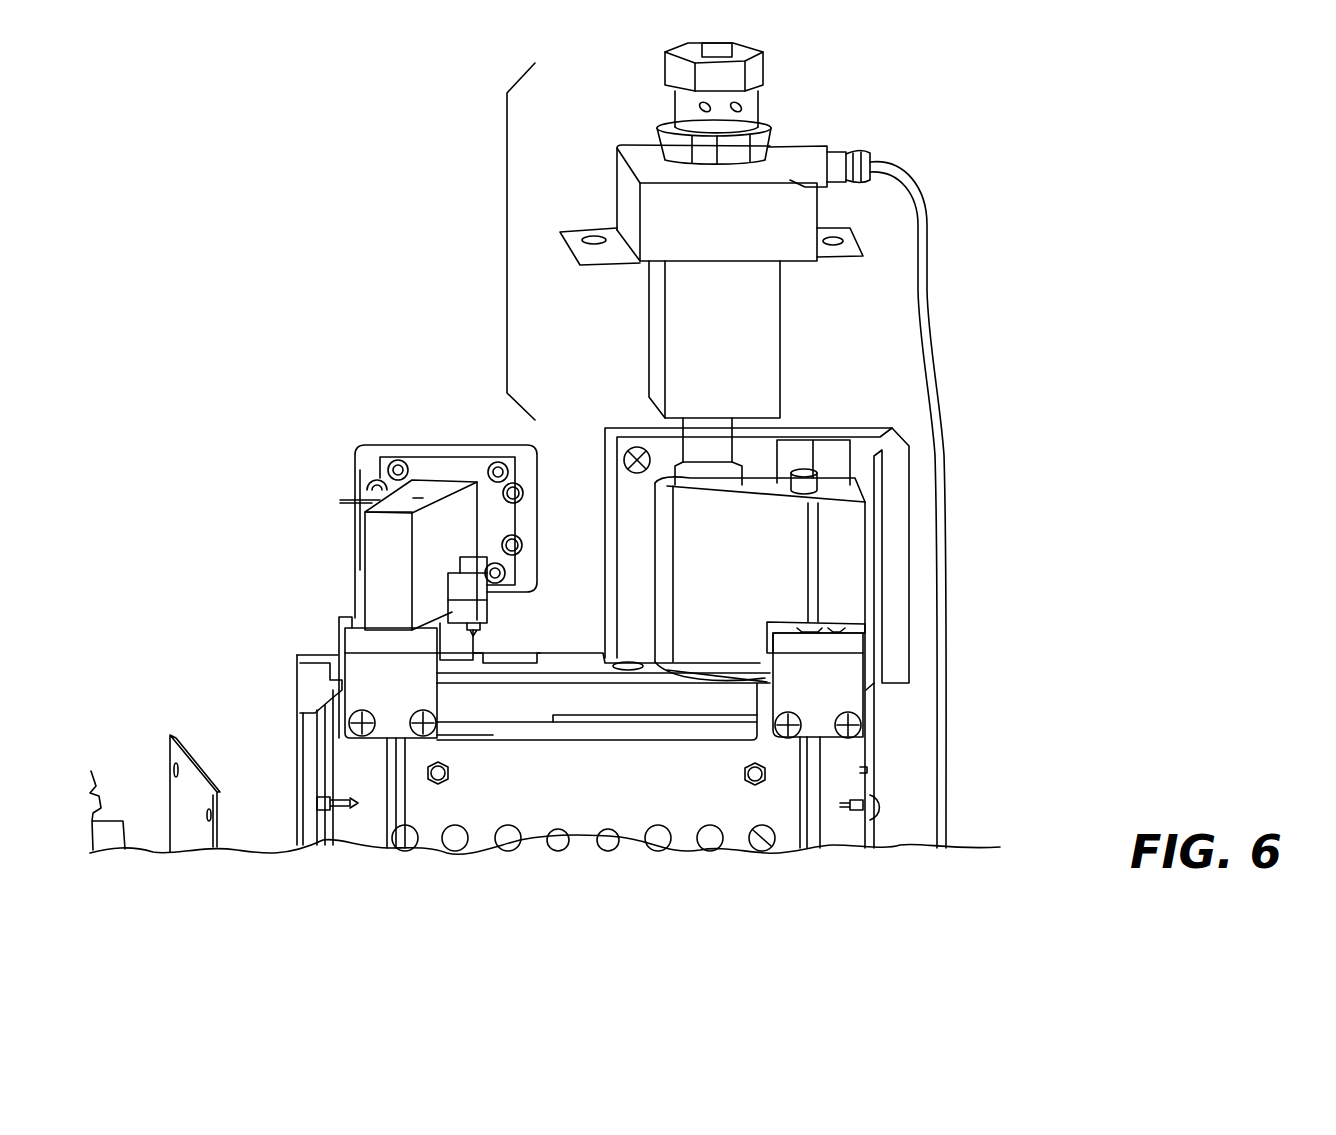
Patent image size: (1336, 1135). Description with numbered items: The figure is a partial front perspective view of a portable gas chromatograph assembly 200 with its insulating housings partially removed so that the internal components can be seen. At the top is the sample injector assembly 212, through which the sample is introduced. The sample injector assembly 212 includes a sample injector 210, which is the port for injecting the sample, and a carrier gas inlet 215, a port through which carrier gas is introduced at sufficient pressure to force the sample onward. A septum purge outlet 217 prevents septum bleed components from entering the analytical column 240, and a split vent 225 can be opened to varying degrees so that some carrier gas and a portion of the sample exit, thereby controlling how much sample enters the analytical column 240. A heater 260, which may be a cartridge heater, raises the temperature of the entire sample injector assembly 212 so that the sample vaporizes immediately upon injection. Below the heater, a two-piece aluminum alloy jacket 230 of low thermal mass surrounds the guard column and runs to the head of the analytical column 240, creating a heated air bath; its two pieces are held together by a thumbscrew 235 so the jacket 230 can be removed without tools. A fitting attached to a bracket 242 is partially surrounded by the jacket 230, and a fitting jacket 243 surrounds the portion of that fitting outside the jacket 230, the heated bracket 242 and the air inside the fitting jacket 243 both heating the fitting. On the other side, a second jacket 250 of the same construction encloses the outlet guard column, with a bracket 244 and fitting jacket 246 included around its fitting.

The gas chromatograph assembly 200 is at (386, 198).
The sample injector 210 is at (768, 63).
The sample injector assembly 212 is at (507, 257).
The carrier gas inlet 215 is at (742, 105).
The septum purge outlet 217 is at (699, 104).
The split vent 225 is at (877, 162).
The jacket 230 is at (862, 533).
The thumbscrew 235 is at (808, 466).
The analytical column 240 is at (390, 790).
The bracket 242 is at (857, 643).
The fitting jacket 243 is at (850, 697).
The bracket 244 is at (357, 641).
The fitting jacket 246 is at (357, 661).
The jacket 250 is at (378, 537).
The heater 260 is at (658, 310).